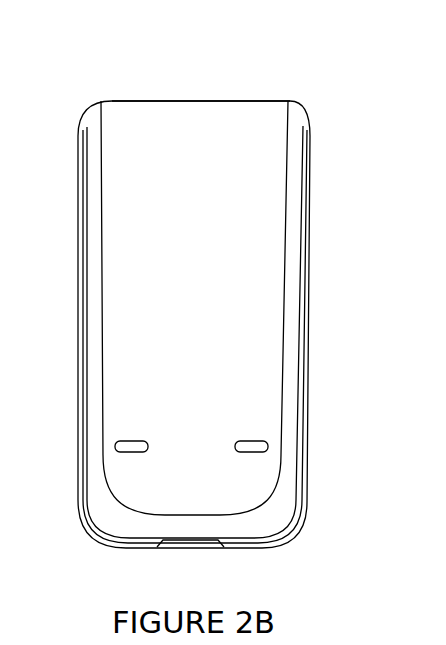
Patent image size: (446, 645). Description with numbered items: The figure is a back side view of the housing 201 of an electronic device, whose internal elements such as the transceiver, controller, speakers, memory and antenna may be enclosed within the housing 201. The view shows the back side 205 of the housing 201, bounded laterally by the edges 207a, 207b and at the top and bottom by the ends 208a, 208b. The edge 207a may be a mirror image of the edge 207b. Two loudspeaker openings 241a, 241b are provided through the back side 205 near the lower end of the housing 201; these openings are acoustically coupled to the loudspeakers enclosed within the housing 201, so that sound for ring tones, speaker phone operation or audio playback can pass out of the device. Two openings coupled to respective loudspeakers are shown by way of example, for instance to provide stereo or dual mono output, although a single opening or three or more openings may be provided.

The housing 201 is at (217, 68).
The back side 205 is at (143, 118).
The edge 207a is at (340, 308).
The edge 207b is at (78, 347).
The end 208a is at (218, 547).
The end 208b is at (240, 100).
The loudspeaker opening 241a is at (250, 441).
The loudspeaker opening 241b is at (130, 441).